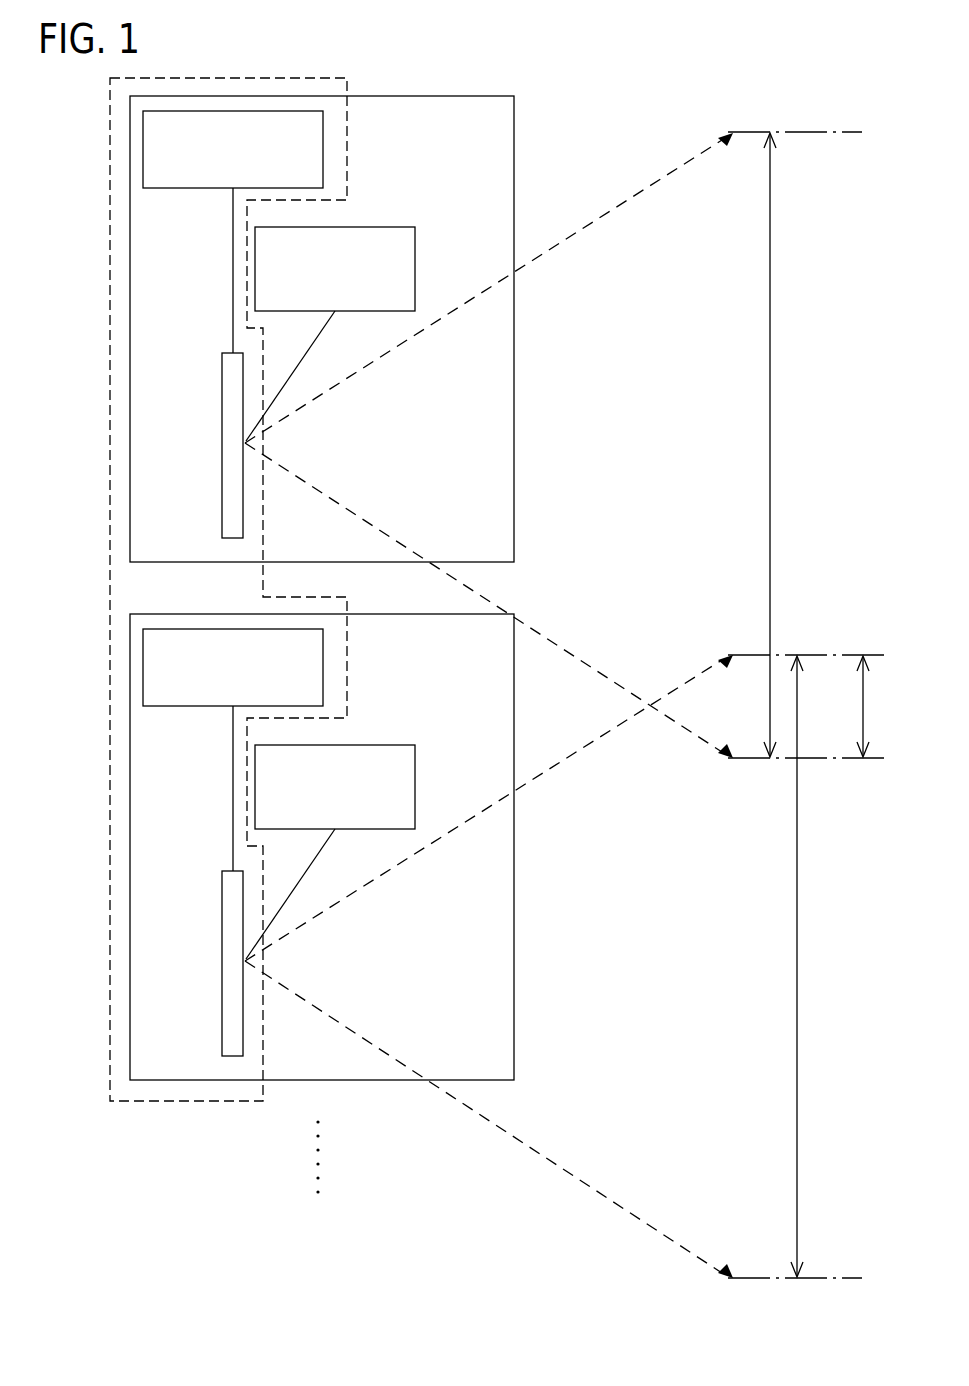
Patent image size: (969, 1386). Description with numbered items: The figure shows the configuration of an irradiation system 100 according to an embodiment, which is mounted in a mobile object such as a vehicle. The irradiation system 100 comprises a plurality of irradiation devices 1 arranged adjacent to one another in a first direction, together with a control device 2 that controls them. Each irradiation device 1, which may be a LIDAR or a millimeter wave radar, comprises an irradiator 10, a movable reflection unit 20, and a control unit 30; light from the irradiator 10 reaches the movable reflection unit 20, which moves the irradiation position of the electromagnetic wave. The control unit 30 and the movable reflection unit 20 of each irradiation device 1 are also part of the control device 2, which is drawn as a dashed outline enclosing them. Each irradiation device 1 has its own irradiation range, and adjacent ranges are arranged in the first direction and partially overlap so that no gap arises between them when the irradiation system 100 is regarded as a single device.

The irradiation system 100 is at (888, 69).
The control device 2 is at (110, 226).
The irradiation device 1 is at (514, 174).
The irradiator 10 is at (415, 268).
The movable reflection unit 20 is at (222, 400).
The control unit 30 is at (143, 155).